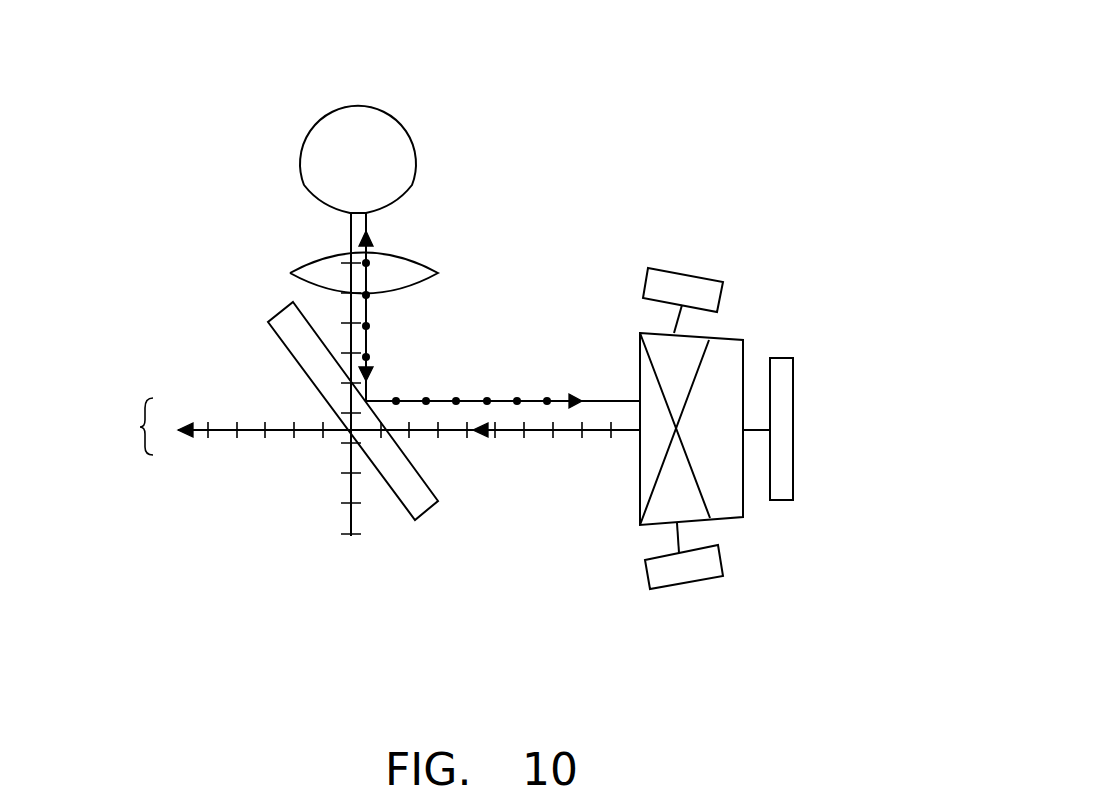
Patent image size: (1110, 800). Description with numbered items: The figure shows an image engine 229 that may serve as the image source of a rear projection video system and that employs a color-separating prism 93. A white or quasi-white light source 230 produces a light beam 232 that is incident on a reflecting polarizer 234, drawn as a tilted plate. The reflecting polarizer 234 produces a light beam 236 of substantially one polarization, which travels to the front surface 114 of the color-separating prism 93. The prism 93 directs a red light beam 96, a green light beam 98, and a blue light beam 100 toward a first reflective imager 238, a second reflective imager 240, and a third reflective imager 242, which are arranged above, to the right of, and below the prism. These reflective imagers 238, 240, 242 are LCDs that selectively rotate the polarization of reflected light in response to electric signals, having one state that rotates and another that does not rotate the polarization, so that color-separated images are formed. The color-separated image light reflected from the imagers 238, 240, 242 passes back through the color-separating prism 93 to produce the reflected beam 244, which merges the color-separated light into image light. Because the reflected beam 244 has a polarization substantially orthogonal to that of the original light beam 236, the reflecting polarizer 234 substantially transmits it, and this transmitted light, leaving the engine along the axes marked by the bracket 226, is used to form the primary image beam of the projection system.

The image engine 229 is at (668, 128).
The light source 230 is at (413, 142).
The light beam 232 is at (341, 233).
The coordinate axes 226 is at (216, 399).
The reflecting polarizer 234 is at (277, 342).
The light beam 236 is at (510, 399).
The reflected beam 244 is at (577, 431).
The color-separating prism 93 is at (725, 508).
The front surface 114 is at (641, 510).
The red light beam 96 is at (673, 322).
The first reflective imager 238 is at (669, 268).
The blue light beam 100 is at (677, 540).
The third reflective imager 242 is at (677, 587).
The green light beam 98 is at (757, 430).
The second reflective imager 240 is at (793, 429).